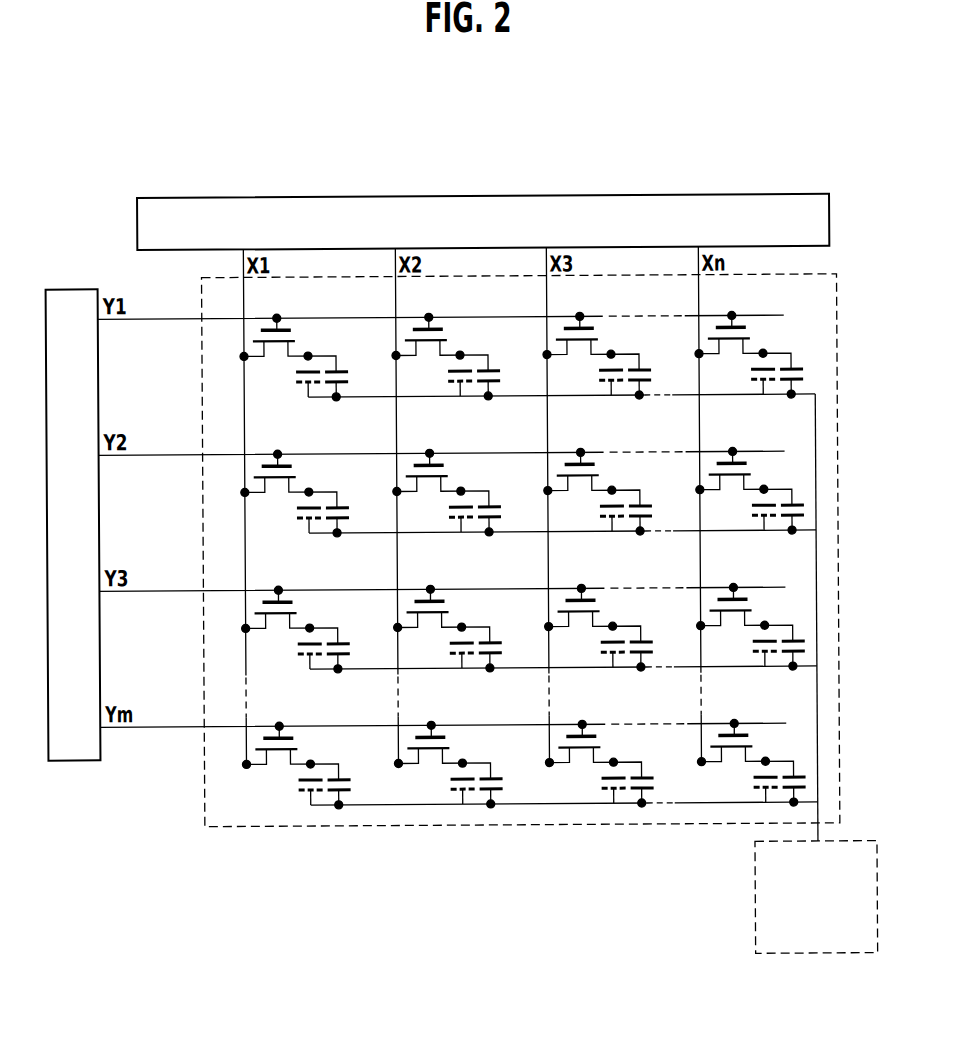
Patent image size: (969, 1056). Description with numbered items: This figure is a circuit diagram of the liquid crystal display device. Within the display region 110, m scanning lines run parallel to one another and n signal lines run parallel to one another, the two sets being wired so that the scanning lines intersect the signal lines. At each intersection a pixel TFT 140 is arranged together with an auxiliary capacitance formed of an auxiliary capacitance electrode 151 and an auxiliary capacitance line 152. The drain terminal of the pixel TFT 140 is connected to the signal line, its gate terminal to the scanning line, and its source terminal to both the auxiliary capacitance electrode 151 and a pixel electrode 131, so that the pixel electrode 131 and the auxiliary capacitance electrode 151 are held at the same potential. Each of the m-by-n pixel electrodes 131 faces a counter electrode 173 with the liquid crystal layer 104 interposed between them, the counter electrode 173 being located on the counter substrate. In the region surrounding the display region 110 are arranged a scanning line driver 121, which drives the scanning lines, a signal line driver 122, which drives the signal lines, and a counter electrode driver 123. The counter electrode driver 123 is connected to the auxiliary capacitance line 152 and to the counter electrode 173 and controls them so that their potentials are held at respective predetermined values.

The signal line driver 122 is at (481, 196).
The scanning line driver 121 is at (79, 287).
The display region 110 is at (468, 580).
The counter electrode driver 123 is at (753, 873).
The pixel TFT 140 is at (415, 324).
The pixel electrode 131 is at (438, 315).
The liquid crystal layer 104 is at (404, 404).
The counter electrode 173 is at (452, 416).
The auxiliary capacitance electrode 151 is at (505, 344).
The auxiliary capacitance line 152 is at (506, 414).